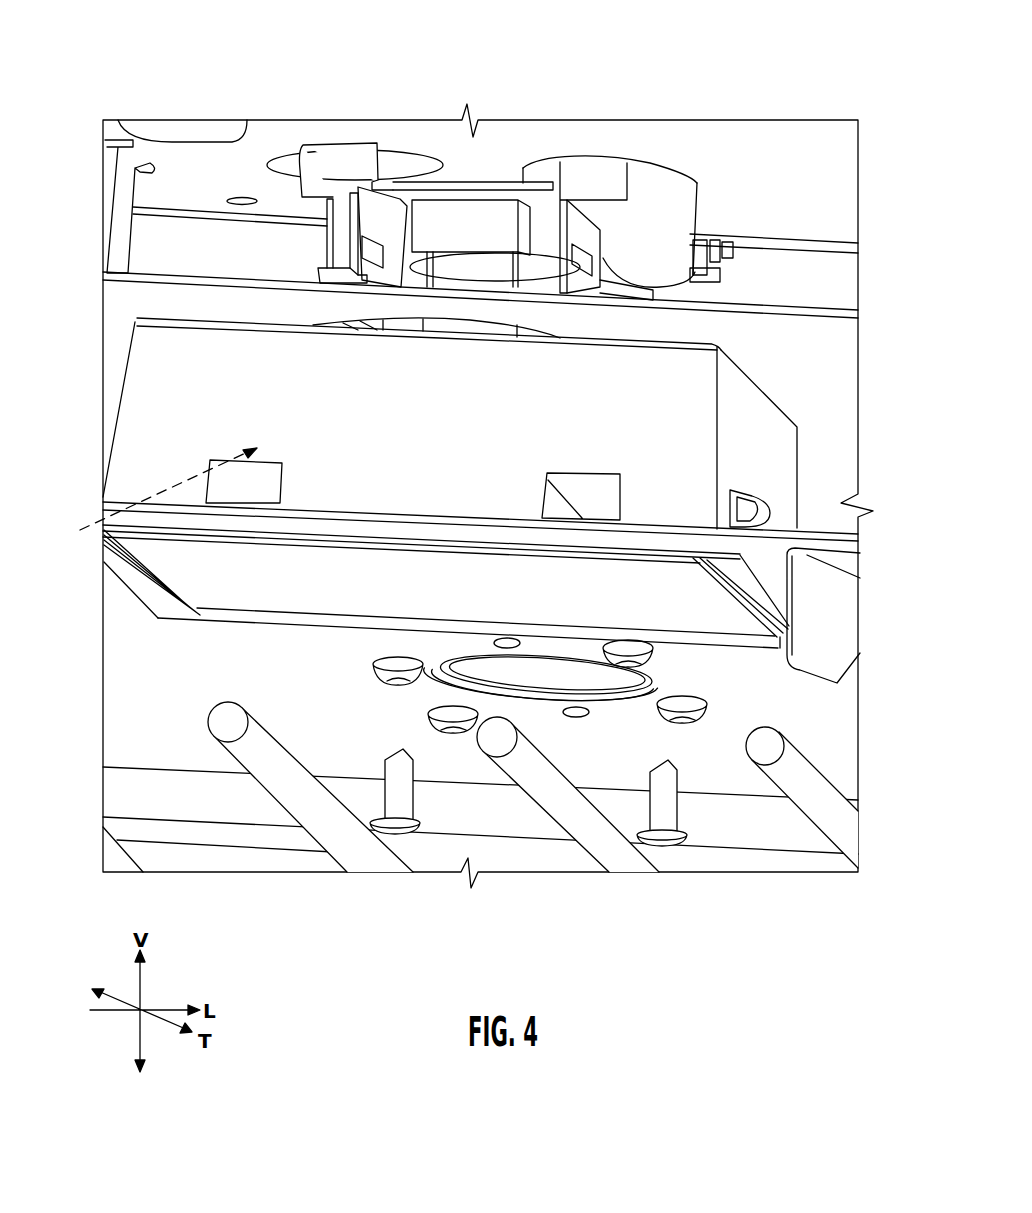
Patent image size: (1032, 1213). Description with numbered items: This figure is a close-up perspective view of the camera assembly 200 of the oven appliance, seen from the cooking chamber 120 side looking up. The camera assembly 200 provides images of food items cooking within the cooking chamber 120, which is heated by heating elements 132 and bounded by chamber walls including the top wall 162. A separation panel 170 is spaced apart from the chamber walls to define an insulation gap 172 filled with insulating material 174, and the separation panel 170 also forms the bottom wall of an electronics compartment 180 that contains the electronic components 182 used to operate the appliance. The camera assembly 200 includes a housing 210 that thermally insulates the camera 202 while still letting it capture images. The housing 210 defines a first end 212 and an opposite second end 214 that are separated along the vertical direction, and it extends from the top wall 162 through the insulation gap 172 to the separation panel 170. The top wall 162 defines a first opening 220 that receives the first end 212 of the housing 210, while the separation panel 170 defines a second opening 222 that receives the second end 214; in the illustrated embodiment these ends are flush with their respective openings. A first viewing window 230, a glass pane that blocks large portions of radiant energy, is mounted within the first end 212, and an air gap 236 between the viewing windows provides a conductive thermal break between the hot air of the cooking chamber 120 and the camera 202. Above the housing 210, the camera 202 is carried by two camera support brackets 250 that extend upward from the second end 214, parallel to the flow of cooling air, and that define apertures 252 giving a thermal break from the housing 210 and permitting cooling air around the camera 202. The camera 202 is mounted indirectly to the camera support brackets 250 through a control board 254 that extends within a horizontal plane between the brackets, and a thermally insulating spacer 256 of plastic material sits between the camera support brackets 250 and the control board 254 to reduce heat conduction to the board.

The cooking chamber 120 is at (443, 832).
The heating elements 132 is at (833, 806).
The top wall 162 is at (807, 545).
The separation panel 170 is at (837, 313).
The insulation gap 172 is at (855, 416).
The insulating material 174 is at (830, 474).
The electronics compartment 180 is at (800, 148).
The electronic components 182 is at (667, 188).
The camera assembly 200 is at (84, 362).
The camera 202 is at (524, 265).
The housing 210 is at (157, 449).
The first end 212 is at (155, 542).
The second end 214 is at (216, 316).
The first opening 220 is at (743, 617).
The second opening 222 is at (403, 315).
The first viewing window 230 is at (415, 597).
The air gap 236 is at (142, 495).
The camera support brackets 250 is at (600, 270).
The apertures 252 is at (680, 300).
The control board 254 is at (505, 196).
The thermally insulating spacer 256 is at (378, 181).